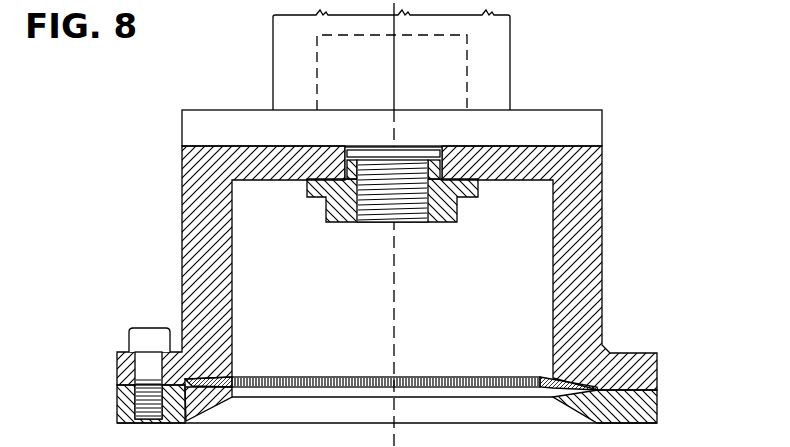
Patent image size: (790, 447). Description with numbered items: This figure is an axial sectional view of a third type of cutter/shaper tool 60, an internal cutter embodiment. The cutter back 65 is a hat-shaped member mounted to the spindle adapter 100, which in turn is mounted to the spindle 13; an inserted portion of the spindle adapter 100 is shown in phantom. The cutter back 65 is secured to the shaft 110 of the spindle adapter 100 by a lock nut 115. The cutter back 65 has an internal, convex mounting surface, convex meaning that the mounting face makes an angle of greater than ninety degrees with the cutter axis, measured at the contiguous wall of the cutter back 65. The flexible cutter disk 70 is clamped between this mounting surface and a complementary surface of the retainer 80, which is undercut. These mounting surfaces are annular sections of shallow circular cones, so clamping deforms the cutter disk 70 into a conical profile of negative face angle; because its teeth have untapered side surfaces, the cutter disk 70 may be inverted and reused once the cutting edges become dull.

The spindle 13 is at (520, 41).
The spindle adapter 100 is at (463, 72).
The housing 60 is at (355, 265).
The cutter back 65 is at (592, 212).
The shaft 110 is at (402, 222).
The lock nut 115 is at (448, 222).
The cutter disk 70 is at (384, 377).
The retainer 80 is at (650, 401).